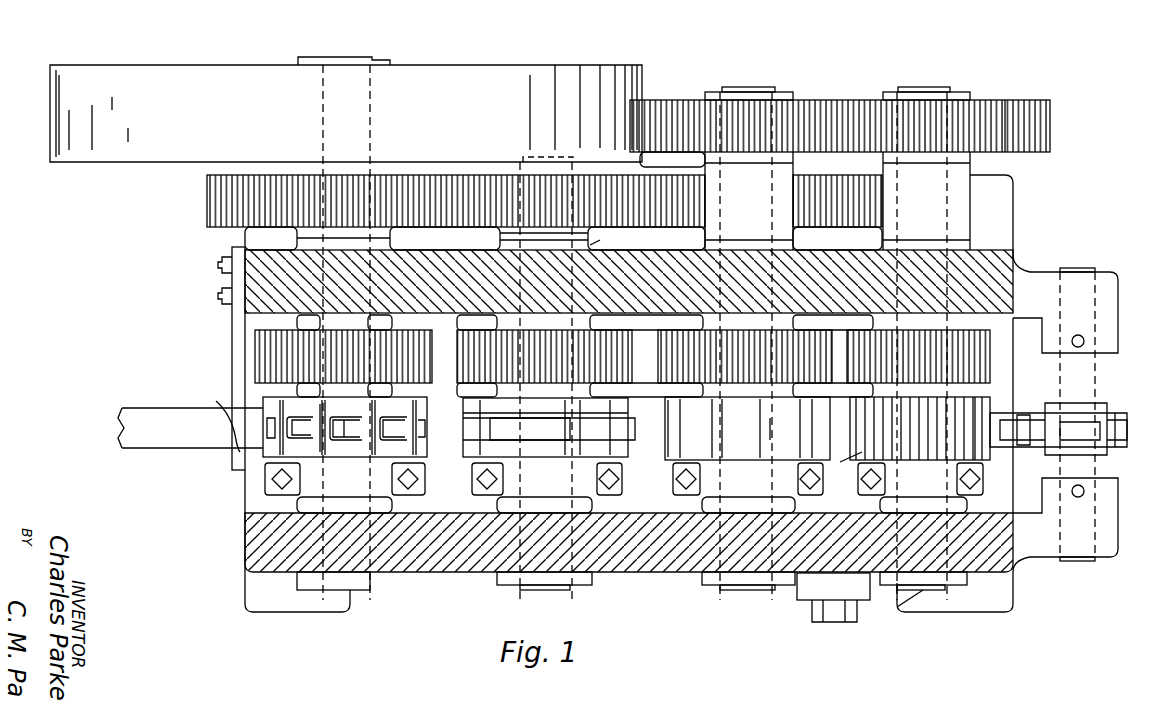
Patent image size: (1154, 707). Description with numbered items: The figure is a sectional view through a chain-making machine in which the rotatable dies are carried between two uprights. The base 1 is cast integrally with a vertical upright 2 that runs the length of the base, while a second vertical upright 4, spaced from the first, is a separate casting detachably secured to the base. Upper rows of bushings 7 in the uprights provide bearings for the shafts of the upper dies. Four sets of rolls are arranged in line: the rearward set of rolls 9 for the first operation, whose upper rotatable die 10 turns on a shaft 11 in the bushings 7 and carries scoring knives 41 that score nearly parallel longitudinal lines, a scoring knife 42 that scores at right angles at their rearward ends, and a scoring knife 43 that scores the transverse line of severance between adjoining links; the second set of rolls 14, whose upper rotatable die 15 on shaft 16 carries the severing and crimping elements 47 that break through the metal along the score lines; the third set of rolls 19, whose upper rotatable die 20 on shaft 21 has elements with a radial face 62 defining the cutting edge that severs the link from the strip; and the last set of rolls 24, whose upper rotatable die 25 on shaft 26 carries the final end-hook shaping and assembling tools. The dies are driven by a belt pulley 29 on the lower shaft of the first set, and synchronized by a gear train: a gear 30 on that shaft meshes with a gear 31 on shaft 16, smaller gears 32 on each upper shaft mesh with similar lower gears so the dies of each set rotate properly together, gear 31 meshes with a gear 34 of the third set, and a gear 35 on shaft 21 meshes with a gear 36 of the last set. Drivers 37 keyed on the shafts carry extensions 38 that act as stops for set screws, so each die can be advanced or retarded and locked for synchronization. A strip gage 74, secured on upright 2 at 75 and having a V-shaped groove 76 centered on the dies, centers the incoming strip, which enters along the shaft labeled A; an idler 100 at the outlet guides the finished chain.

The base 1 is at (997, 229).
The vertical upright 2 is at (1002, 268).
The vertical upright 4 is at (627, 558).
The upper row of bushings 7 is at (588, 246).
The rearward set of rolls 9 is at (342, 439).
The upper rotatable die 10 is at (405, 403).
The shaft 11 is at (357, 592).
The second set of rolls 14 is at (549, 427).
The upper rotatable die 15 is at (612, 450).
The shaft 16 is at (532, 590).
The third set of rolls 19 is at (747, 428).
The upper rotatable die 20 is at (693, 410).
The shaft 21 is at (738, 592).
The last set of rolls 24 is at (920, 428).
The upper rotatable die 25 is at (845, 465).
The shaft 26 is at (897, 610).
The belt pulley 29 is at (68, 127).
The gear 30 is at (207, 199).
The gear 31 is at (485, 224).
The smaller gear 32 is at (410, 340).
The gear 34 is at (838, 180).
The gear 35 is at (840, 97).
The gear 36 is at (1016, 96).
The driver 37 is at (452, 490).
The extension 38 is at (825, 622).
The scoring knife 41 is at (315, 414).
The scoring knife 42 is at (330, 422).
The scoring knife 43 is at (320, 448).
The severing and crimping element 47 is at (514, 408).
The radial face 62 is at (772, 420).
The strip gage 74 is at (234, 345).
The securing point 75 is at (222, 297).
The V-shaped groove 76 is at (235, 405).
The idler 100 is at (1112, 428).
The shaft A is at (157, 404).